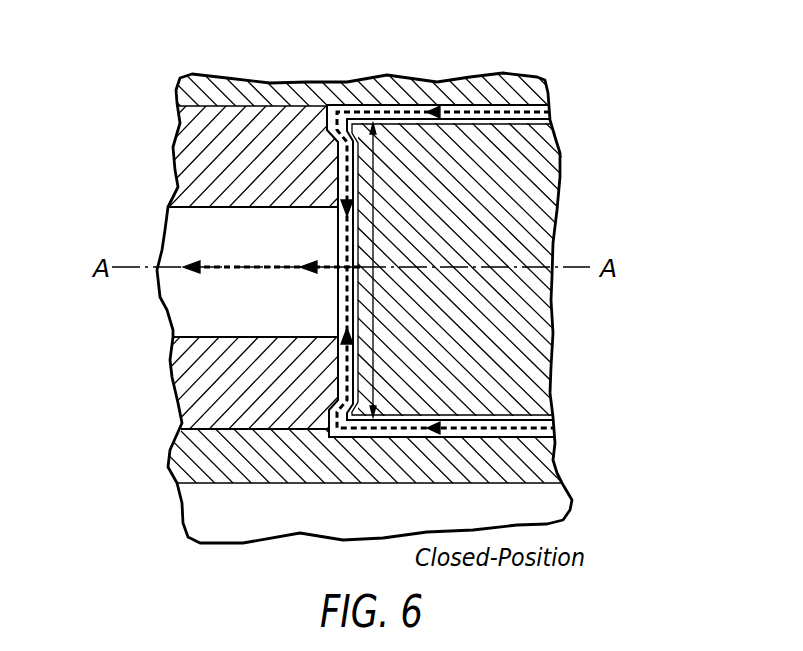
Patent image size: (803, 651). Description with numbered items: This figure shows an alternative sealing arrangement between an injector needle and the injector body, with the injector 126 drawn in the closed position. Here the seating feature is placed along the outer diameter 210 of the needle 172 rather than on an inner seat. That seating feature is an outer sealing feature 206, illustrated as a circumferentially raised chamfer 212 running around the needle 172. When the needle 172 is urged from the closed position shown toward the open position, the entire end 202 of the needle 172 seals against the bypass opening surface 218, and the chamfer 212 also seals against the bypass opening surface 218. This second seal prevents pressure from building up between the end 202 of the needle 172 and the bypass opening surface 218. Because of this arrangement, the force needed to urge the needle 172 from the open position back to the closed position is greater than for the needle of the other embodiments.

The injector 126 is at (160, 155).
The needle 172 is at (533, 167).
The end of the needle 202 is at (400, 210).
The outer sealing feature 206 is at (327, 120).
The outer diameter 210 is at (373, 255).
The chamfer 212 is at (345, 127).
The bypass opening surface 218 is at (337, 394).